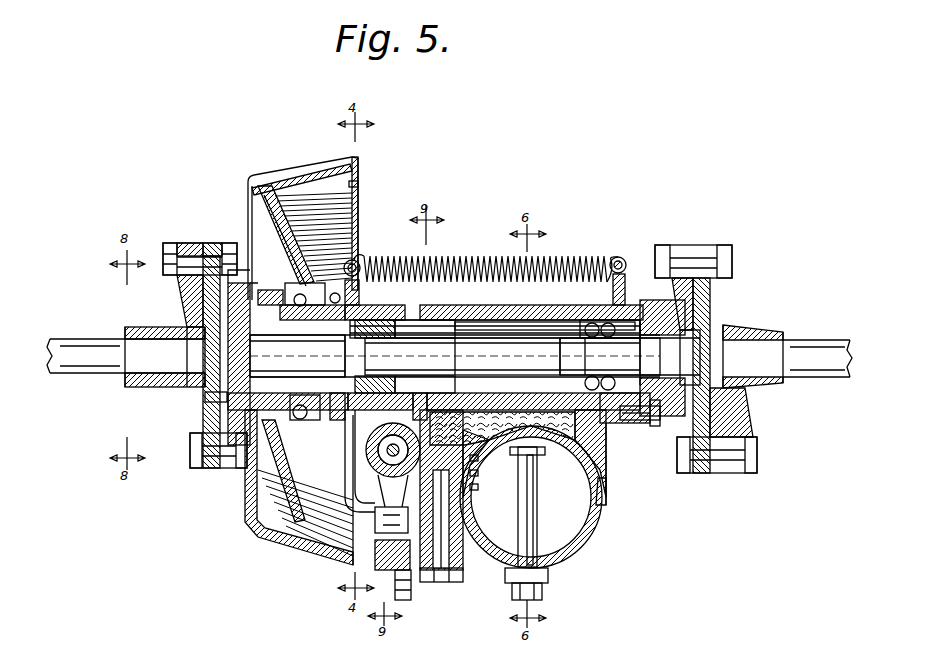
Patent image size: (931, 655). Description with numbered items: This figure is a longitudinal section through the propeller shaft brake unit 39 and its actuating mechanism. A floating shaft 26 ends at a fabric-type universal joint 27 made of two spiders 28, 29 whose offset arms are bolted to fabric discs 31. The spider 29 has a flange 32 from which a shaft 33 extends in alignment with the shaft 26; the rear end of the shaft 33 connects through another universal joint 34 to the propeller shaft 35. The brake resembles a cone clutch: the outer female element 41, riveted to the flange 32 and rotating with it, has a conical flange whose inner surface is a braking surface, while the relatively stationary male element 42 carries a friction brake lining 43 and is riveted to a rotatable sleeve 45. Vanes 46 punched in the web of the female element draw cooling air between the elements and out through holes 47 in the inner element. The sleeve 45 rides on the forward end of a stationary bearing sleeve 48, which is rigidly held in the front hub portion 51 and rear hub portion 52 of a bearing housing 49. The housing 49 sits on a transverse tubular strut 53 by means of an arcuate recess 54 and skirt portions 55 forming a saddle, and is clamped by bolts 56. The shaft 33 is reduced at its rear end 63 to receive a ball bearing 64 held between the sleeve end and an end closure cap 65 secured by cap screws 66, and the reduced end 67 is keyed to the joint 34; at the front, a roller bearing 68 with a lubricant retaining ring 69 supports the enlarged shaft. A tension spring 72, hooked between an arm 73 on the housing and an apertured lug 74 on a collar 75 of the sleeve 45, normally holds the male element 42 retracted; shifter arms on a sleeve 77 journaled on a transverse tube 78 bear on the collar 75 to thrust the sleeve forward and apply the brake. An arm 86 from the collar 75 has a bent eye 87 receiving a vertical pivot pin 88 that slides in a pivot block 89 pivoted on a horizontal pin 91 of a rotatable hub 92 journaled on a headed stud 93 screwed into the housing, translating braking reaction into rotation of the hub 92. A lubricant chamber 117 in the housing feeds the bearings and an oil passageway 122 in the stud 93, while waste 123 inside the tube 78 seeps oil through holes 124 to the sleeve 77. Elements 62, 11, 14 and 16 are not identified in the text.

The shaft 26 is at (94, 340).
The universal joint 27 is at (185, 243).
The spider 28 is at (186, 306).
The spider 29 is at (210, 407).
The fabric discs 31 is at (213, 244).
The flange 32 is at (186, 325).
The shaft 33 is at (455, 357).
The universal joint 34 is at (703, 245).
The propeller shaft 35 is at (820, 350).
The propeller shaft brake unit 39 is at (275, 176).
The female brake element 41 is at (318, 172).
The male brake element 42 is at (358, 184).
The friction brake lining 43 is at (354, 175).
The rotatable sleeve 45 is at (330, 304).
The vanes 46 is at (250, 290).
The holes 47 is at (358, 205).
The bearing sleeve 48 is at (420, 322).
The bearing housing 49 is at (470, 328).
The front hub portion 51 is at (453, 320).
The rear hub portion 52 is at (580, 320).
The tubular strut 53 is at (592, 532).
The arcuate recess 54 is at (555, 450).
The skirt portions 55 is at (606, 497).
The bolts 56 is at (535, 540).
The bearing 62 is at (296, 406).
The reduced rear end 63 is at (600, 352).
The ball bearing 64 is at (625, 325).
The end closure cap 65 is at (628, 426).
The cap screws 66 is at (652, 426).
The reduced end 67 is at (670, 357).
The roller bearing 68 is at (297, 356).
The lubricant retaining ring 69 is at (215, 397).
The tension spring 72 is at (466, 262).
The arm 73 is at (626, 272).
The apertured lug 74 is at (356, 262).
The collar 75 is at (366, 312).
The sleeve 77 is at (385, 445).
The sleeve 78 is at (390, 452).
The arm 86 is at (345, 483).
The eye 87 is at (340, 555).
The vertical pivot pin 88 is at (392, 507).
The pivot block 89 is at (378, 556).
The horizontal pivot pin 91 is at (400, 582).
The rotatable hub 92 is at (460, 545).
The headed stud 93 is at (445, 582).
The lubricant chamber 117 is at (606, 465).
The oil passageway 122 is at (478, 488).
The waste 123 is at (478, 458).
The holes 124 is at (478, 474).
The bearing 11 is at (380, 338).
The bearing block 14 is at (342, 412).
The bearing race 16 is at (400, 395).